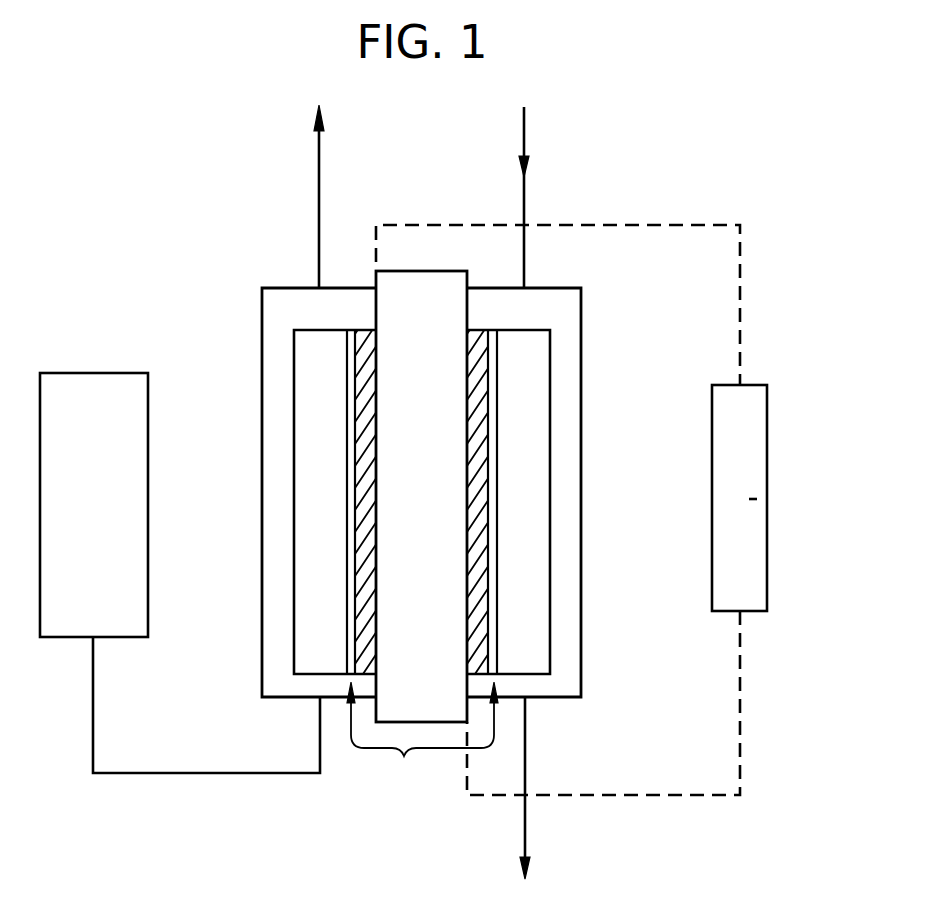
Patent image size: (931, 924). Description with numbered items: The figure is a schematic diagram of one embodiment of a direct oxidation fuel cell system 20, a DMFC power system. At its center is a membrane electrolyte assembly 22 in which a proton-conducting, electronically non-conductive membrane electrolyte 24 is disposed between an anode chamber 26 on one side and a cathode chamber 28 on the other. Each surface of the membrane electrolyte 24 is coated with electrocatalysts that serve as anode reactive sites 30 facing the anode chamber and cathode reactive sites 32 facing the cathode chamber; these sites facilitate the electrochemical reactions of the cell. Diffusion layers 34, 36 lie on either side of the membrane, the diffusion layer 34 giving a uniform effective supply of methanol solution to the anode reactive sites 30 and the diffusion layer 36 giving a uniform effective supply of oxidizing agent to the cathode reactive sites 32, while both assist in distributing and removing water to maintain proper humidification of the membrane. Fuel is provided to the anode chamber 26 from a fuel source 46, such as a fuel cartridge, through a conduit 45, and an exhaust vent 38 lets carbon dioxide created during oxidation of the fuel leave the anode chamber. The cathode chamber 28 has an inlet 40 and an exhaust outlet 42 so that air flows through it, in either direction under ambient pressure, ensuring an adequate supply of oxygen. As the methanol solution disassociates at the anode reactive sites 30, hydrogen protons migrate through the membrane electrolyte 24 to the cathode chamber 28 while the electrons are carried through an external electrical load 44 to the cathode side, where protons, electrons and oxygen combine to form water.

The direct oxidation fuel cell system 20 is at (138, 210).
The membrane electrolyte assembly 22 is at (422, 736).
The membrane electrolyte 24 is at (415, 499).
The anode chamber 26 is at (316, 368).
The cathode chamber 28 is at (533, 393).
The anode reactive sites 30 is at (365, 494).
The cathode reactive sites 32 is at (486, 578).
The diffusion layer 34 is at (350, 428).
The diffusion layer 36 is at (492, 462).
The exhaust vent 38 is at (319, 167).
The inlet 40 is at (524, 149).
The exhaust outlet 42 is at (525, 815).
The external electrical load 44 is at (753, 567).
The conduit 45 is at (228, 775).
The fuel source 46 is at (83, 498).